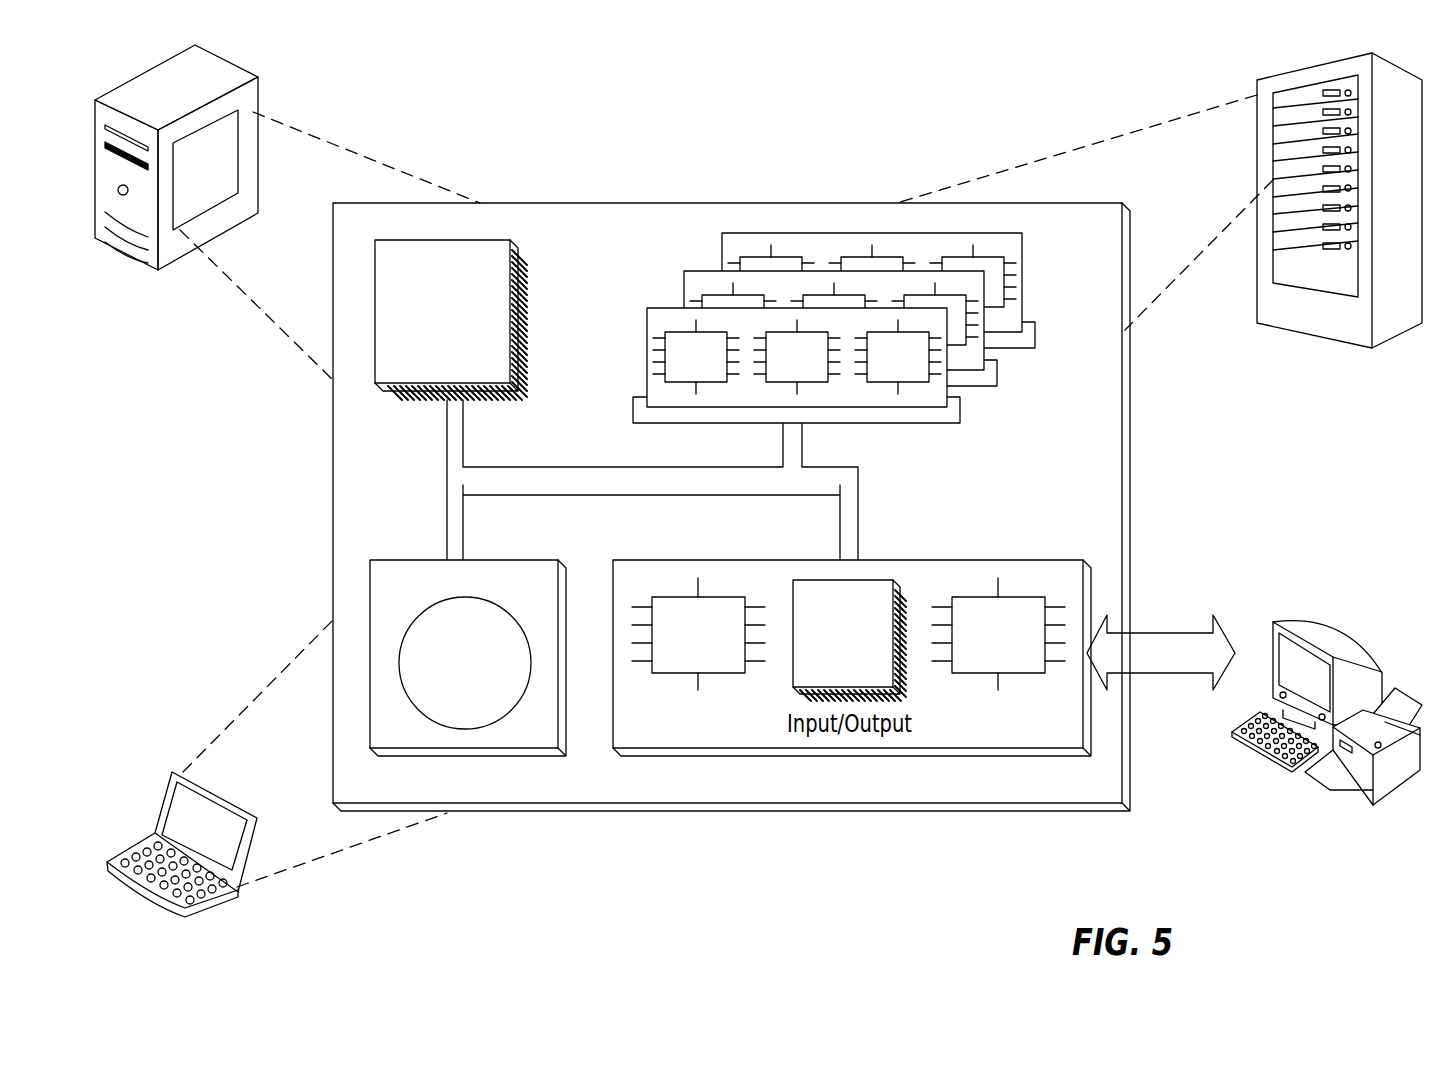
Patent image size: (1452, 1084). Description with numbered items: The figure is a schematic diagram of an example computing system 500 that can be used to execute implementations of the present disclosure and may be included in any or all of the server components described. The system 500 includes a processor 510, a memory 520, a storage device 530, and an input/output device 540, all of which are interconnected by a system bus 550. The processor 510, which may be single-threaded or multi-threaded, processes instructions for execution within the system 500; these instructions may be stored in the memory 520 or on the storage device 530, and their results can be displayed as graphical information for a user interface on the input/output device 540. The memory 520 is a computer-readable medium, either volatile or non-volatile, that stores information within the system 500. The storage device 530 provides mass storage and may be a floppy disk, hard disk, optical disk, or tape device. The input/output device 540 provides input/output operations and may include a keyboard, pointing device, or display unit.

The computing system 500 is at (540, 115).
The processor 510 is at (501, 377).
The memory 520 is at (1027, 382).
The storage device 530 is at (549, 739).
The input/output device 540 is at (1272, 626).
The system bus 550 is at (647, 486).